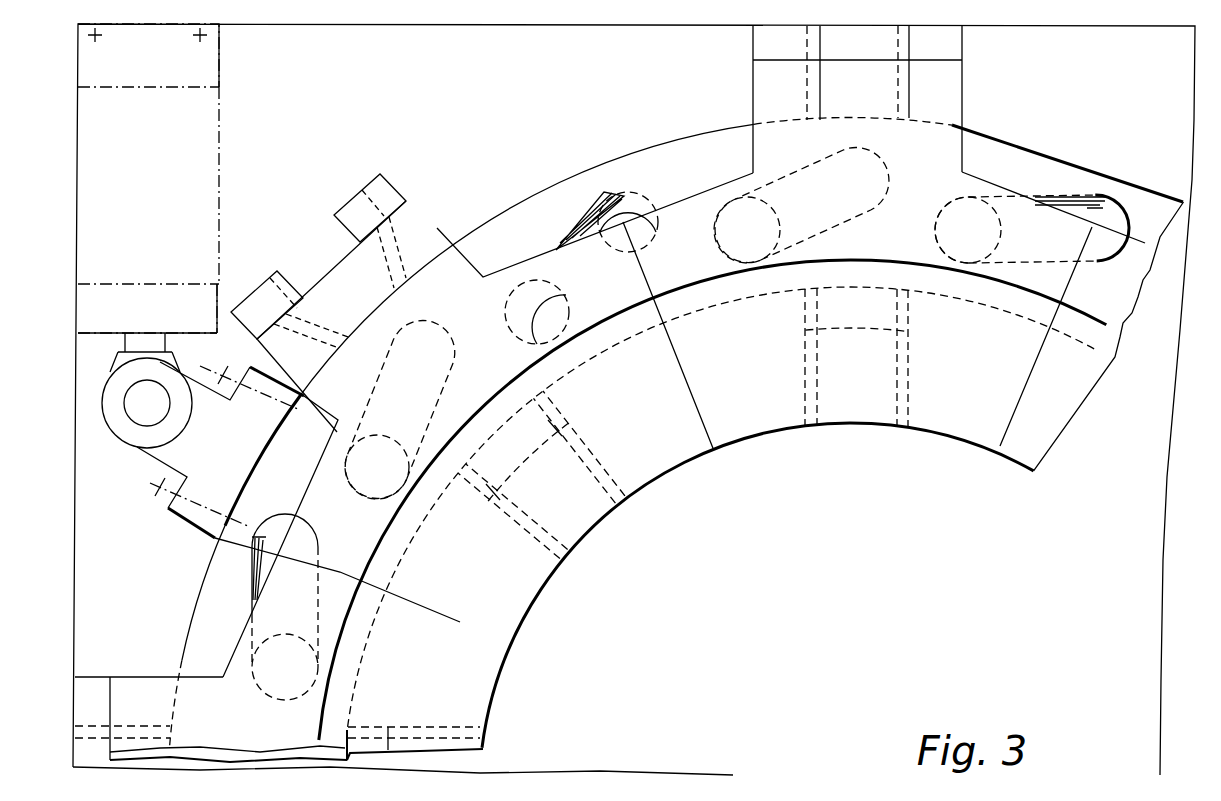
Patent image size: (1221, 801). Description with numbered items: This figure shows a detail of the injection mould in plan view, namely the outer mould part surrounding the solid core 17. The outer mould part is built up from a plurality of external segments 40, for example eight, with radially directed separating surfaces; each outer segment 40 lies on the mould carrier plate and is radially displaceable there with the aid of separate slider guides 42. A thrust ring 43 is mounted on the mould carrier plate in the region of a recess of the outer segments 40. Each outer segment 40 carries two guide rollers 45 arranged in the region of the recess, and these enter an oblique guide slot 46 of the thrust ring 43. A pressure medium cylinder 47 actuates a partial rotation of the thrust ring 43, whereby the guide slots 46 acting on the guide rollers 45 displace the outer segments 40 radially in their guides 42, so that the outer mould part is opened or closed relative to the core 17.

The core 17 is at (1013, 458).
The outer segments 40 is at (780, 420).
The slider guides 42 is at (372, 197).
The thrust ring 43 is at (648, 163).
The guide rollers 45 is at (570, 323).
The guide slot 46 is at (583, 213).
The pressure medium cylinder 47 is at (198, 128).